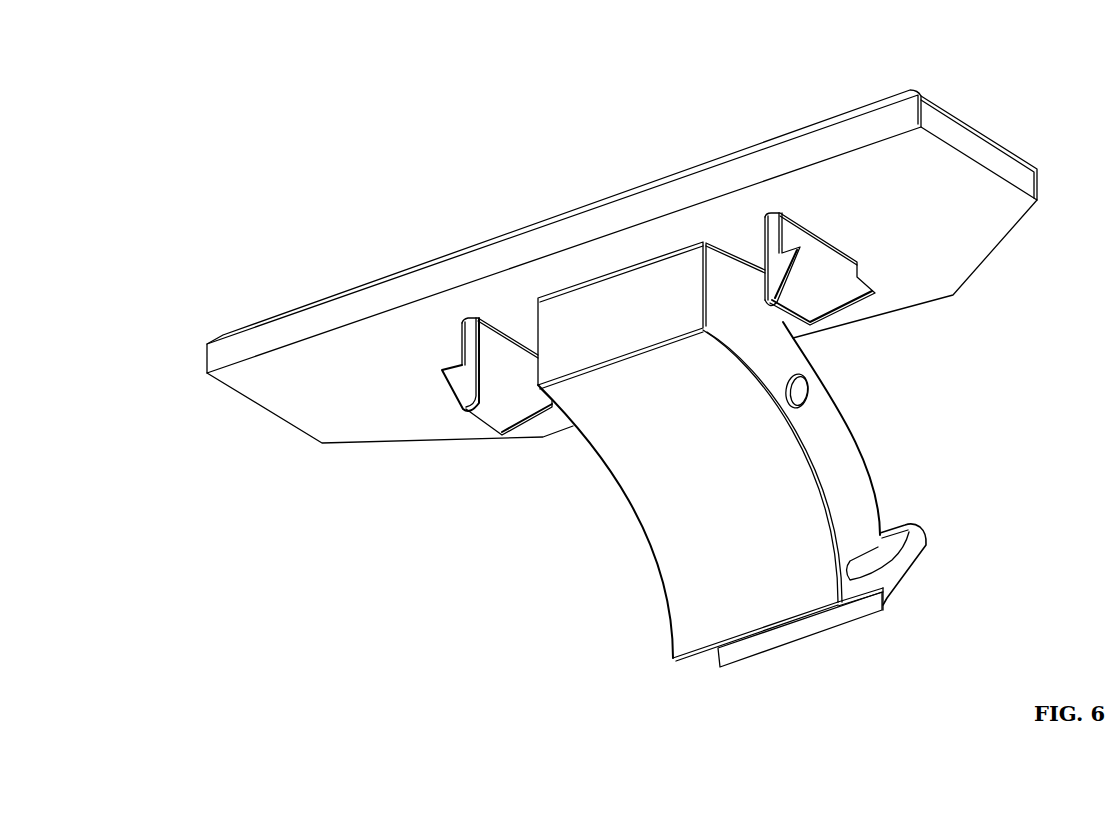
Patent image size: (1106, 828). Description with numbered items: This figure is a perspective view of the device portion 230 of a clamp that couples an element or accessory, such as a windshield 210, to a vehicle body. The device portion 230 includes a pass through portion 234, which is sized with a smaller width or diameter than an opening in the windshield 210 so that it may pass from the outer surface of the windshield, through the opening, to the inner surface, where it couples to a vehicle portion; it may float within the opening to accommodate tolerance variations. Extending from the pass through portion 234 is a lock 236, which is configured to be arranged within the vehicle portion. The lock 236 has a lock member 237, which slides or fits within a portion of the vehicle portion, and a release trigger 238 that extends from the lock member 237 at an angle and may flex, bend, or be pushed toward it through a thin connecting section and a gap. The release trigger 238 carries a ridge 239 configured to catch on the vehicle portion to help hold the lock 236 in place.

The windshield 210 is at (892, 152).
The device portion 230 is at (748, 393).
The pass through portion 234 is at (628, 308).
The lock 236 is at (775, 491).
The lock member 237 is at (663, 498).
The release trigger 238 is at (917, 540).
The ridge 239 is at (855, 620).